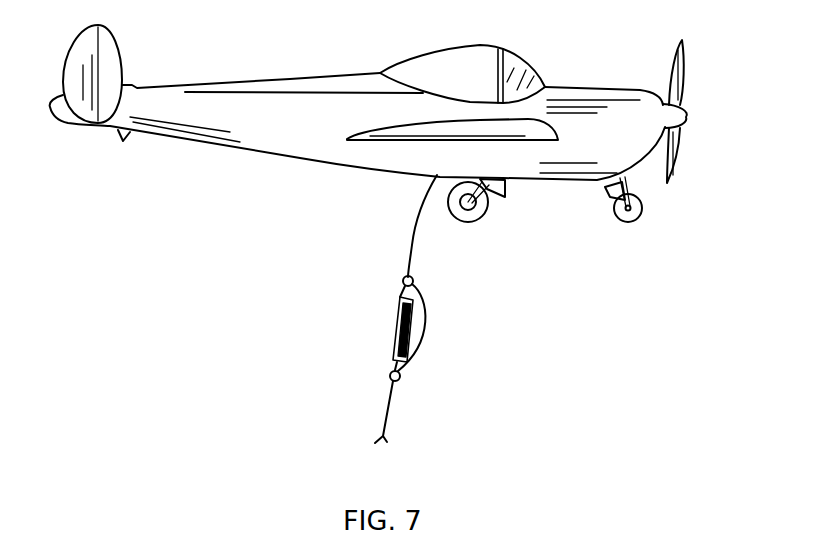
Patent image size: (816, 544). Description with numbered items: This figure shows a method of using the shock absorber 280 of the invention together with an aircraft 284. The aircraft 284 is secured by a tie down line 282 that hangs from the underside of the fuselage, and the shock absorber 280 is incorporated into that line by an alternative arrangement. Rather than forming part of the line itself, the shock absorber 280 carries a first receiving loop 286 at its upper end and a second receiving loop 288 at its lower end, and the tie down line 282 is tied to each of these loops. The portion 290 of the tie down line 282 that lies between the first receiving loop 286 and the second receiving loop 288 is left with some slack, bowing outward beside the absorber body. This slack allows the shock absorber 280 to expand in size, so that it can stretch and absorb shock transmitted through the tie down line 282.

The shock absorber 280 is at (375, 348).
The tie down line 282 is at (417, 215).
The aircraft 284 is at (247, 153).
The first receiving loop 286 is at (404, 278).
The second receiving loop 288 is at (343, 394).
The portion of the tie down line 290 is at (430, 322).